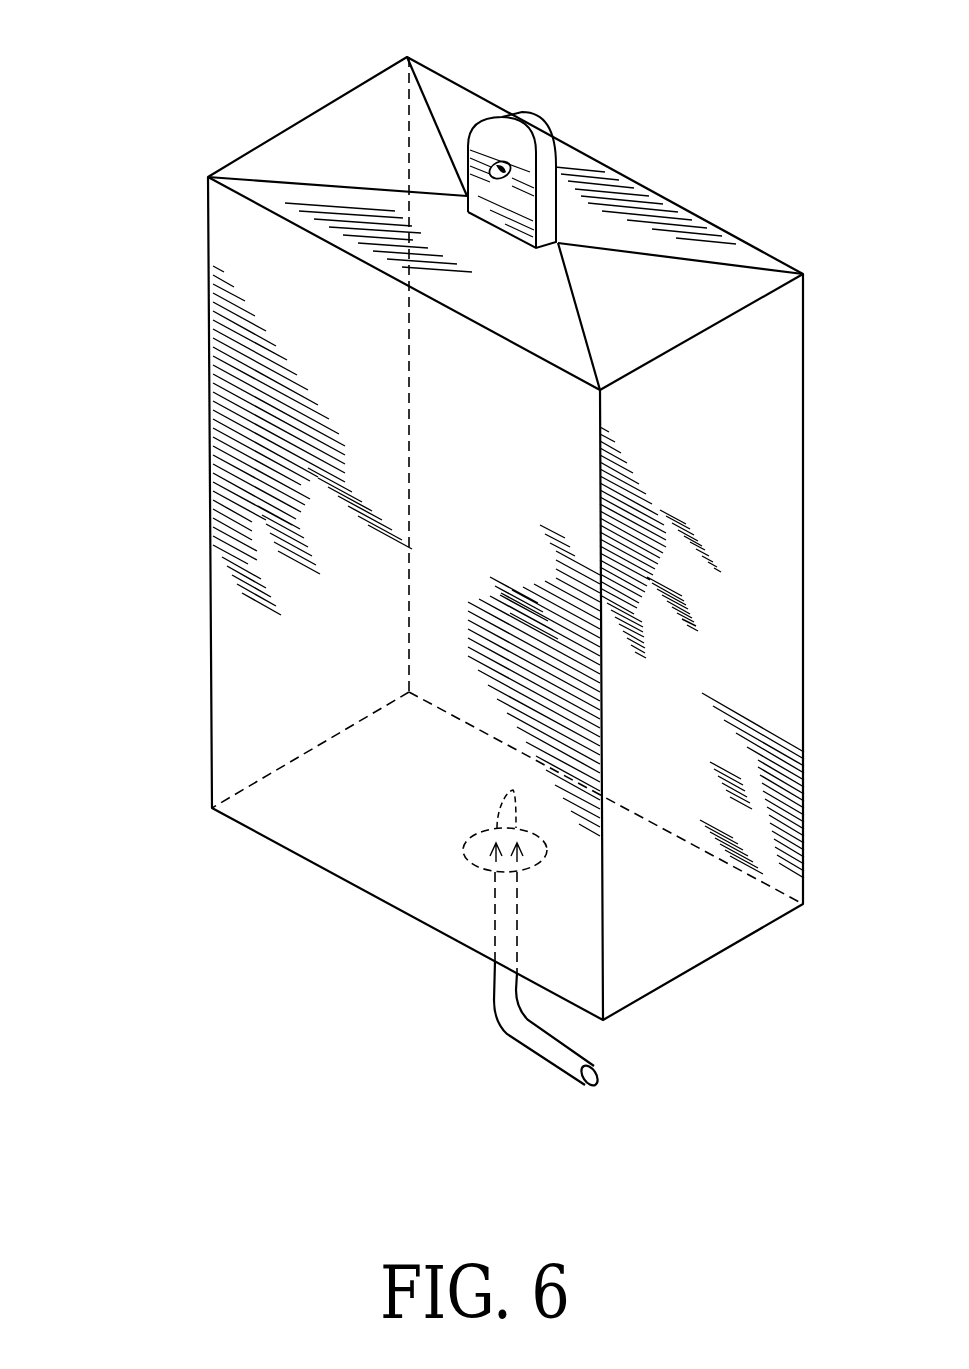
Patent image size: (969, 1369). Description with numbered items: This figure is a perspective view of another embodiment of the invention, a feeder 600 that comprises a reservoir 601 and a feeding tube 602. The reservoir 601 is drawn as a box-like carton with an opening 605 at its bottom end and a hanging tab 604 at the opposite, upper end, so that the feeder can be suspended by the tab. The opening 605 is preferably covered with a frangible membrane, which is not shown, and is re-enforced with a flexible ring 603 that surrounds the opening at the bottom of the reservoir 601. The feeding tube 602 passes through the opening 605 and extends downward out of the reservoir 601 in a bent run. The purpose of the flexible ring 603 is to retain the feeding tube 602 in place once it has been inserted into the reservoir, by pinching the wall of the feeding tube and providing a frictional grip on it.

The feeder 600 is at (808, 176).
The reservoir 601 is at (212, 356).
The feeding tube 602 is at (508, 1034).
The flexible ring 603 is at (468, 858).
The hanging tab 604 is at (530, 143).
The opening 605 is at (497, 875).